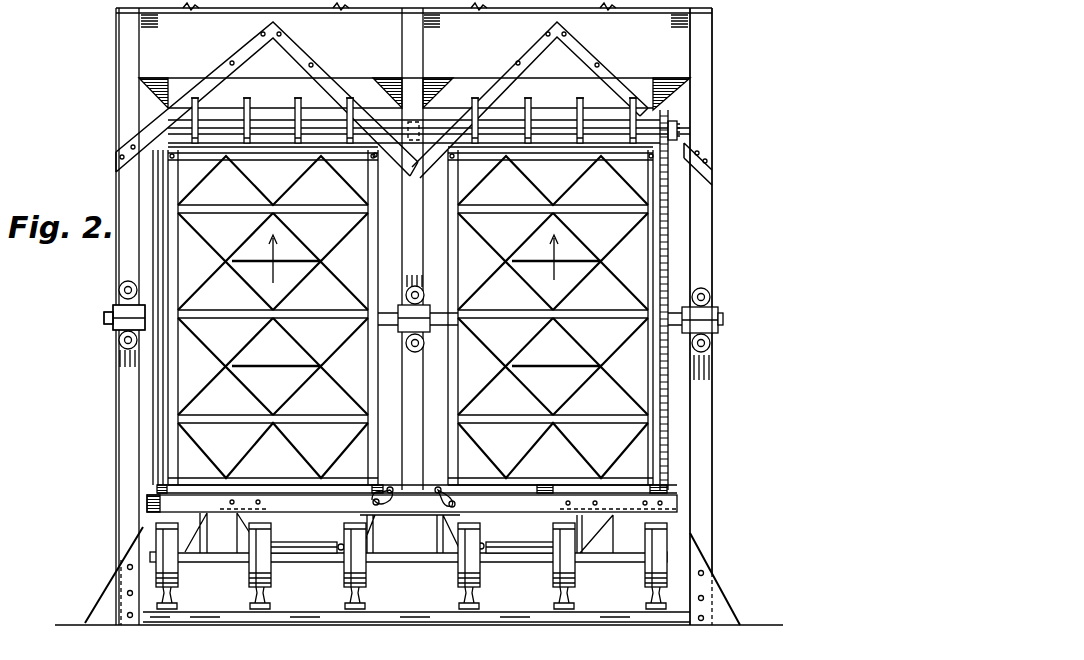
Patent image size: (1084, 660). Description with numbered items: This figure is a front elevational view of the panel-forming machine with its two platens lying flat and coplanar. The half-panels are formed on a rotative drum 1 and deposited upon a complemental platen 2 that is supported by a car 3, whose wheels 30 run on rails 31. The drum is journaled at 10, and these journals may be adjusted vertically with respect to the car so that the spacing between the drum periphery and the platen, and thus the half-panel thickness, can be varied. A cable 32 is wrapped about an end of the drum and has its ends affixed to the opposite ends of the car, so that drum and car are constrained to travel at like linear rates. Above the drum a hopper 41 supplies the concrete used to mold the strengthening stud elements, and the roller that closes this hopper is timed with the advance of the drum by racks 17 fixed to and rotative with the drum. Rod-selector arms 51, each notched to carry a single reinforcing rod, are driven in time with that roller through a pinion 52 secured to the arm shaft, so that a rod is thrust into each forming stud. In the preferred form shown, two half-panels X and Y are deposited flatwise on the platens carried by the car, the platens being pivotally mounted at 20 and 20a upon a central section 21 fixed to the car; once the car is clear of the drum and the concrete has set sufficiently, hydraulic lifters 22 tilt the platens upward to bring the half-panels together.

The rotative drum 1 is at (670, 372).
The platen 2 is at (143, 485).
The car 3 is at (153, 507).
The journals of the drums 10 is at (107, 313).
The rack 17 is at (665, 206).
The pivotal mounting 20 is at (403, 479).
The pivotal mounting 20a is at (438, 488).
The central section 21 is at (407, 507).
The hydraulic lifter 22 is at (305, 555).
The wheel 30 is at (245, 580).
The rail 31 is at (347, 598).
The cable 32 is at (163, 387).
The hopper 41 is at (283, 101).
The rod-selector arm 51 is at (236, 108).
The pinion 52 is at (672, 118).
The half-panel X is at (205, 487).
The half-panel Y is at (632, 492).